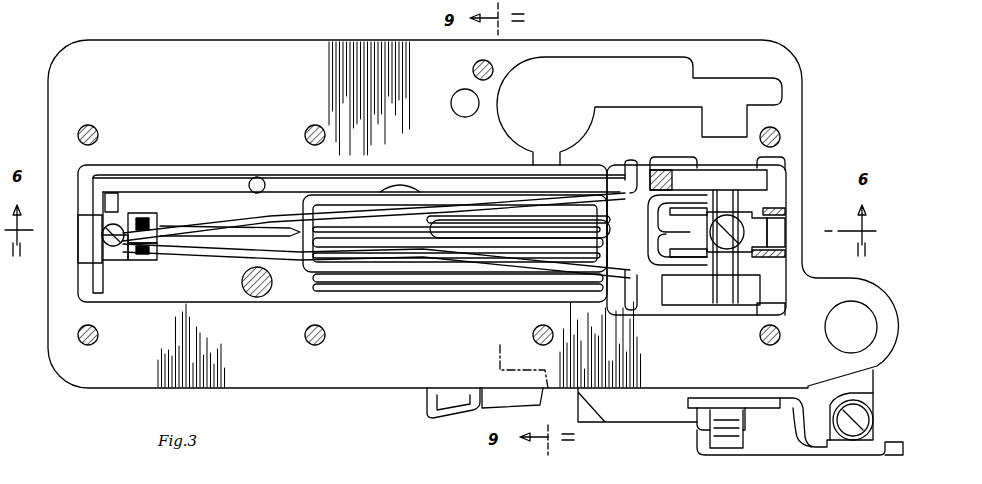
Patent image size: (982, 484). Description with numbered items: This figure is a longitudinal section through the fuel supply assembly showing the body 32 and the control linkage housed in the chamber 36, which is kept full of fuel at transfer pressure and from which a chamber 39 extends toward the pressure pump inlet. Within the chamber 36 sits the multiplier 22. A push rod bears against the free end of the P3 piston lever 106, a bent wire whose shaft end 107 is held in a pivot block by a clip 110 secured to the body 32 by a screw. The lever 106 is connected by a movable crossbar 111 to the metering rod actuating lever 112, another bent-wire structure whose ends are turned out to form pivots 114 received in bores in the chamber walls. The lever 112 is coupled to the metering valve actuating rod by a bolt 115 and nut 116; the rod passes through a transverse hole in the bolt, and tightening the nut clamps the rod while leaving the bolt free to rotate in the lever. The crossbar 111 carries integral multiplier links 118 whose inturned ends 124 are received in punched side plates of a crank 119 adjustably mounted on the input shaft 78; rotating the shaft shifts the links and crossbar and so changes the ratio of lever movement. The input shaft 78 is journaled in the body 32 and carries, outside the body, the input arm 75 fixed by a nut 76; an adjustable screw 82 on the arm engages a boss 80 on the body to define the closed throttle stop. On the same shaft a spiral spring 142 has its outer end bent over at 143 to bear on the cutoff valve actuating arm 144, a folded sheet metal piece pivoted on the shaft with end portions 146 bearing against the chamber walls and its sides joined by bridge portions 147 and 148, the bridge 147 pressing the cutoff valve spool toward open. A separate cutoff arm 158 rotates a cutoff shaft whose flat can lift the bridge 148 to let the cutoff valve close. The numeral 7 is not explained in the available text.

The body 32 is at (120, 42).
The P3 piston lever 106 is at (200, 178).
The shaft end 107 is at (98, 298).
The clamp block 7 is at (124, 212).
The nut 116 is at (150, 222).
The bolt 115 is at (157, 250).
The clip 110 is at (130, 270).
The crossbar 111 is at (298, 262).
The metering rod actuating lever 112 is at (284, 207).
The bridge portion 147 is at (432, 214).
The bridge portion 148 is at (528, 250).
The multiplier links 118 is at (488, 195).
The multiplier 22 is at (447, 288).
The chamber 36 is at (350, 145).
The chamber 39 is at (402, 190).
The pivots 114 is at (631, 160).
The bent-over outer end 143 is at (662, 158).
The end portions 146 is at (716, 160).
The spiral spring 142 is at (772, 178).
The crank 119 is at (785, 207).
The inturned ends 124 is at (738, 264).
The cutoff valve actuating arm 144 is at (660, 215).
The input shaft 78 is at (715, 282).
The cutoff arm 158 is at (427, 408).
The nut 76 is at (698, 425).
The input arm 75 is at (812, 456).
The adjustable screw 82 is at (872, 425).
The boss 80 is at (868, 393).